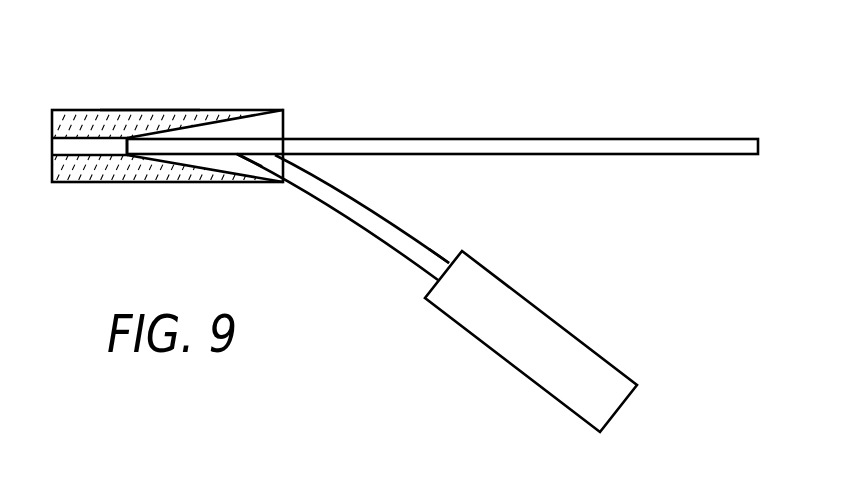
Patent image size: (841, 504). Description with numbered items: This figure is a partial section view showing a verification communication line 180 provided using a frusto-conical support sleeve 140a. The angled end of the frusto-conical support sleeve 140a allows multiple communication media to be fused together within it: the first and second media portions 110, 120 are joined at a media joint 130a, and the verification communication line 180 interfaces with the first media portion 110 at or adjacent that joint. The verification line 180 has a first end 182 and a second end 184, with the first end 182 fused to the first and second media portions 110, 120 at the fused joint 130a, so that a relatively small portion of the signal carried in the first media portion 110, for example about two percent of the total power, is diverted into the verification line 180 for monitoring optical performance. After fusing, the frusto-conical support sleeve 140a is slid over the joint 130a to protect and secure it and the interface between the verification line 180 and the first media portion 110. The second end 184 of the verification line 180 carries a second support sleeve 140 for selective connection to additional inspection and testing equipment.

The first media portion 110 is at (420, 138).
The second media portion 120 is at (77, 147).
The media joint 130a is at (260, 143).
The support sleeve 140 is at (517, 370).
The frusto-conical support sleeve 140a is at (146, 88).
The verification communication line 180 is at (380, 230).
The first end 182 is at (291, 184).
The second end 184 is at (440, 265).